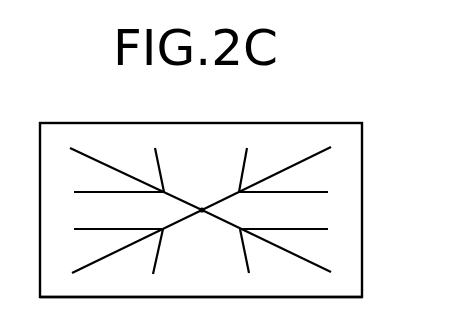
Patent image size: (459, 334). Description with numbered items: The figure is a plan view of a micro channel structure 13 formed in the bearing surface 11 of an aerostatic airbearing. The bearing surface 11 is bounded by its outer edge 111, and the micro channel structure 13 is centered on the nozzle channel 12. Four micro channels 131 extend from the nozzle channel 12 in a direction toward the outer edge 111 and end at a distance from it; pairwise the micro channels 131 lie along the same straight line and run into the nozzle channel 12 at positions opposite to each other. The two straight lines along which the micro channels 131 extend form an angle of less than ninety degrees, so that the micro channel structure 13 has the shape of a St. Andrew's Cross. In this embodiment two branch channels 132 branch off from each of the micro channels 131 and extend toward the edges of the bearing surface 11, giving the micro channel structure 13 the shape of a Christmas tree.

The bearing surface 11 is at (357, 157).
The outer edge 111 is at (363, 282).
The nozzle channel 12 is at (203, 208).
The micro channel structure 13 is at (231, 239).
The micro channel 131 is at (231, 198).
The branch channel 132 is at (248, 160).